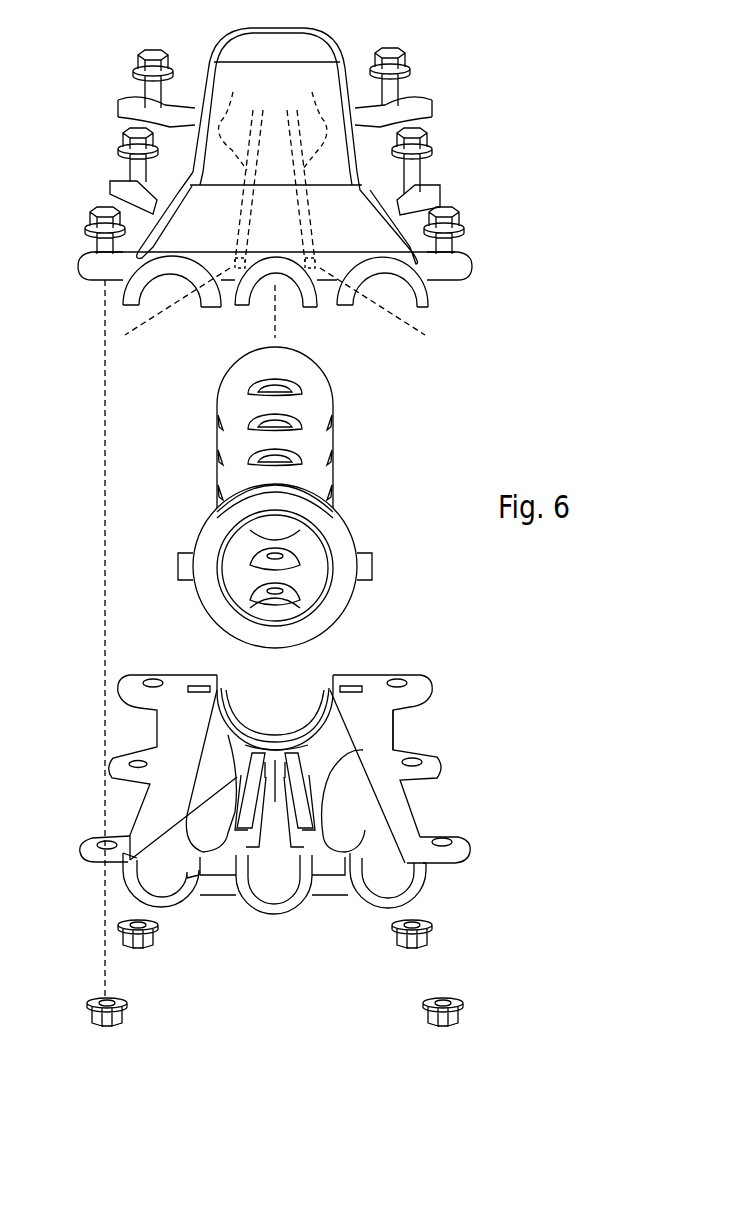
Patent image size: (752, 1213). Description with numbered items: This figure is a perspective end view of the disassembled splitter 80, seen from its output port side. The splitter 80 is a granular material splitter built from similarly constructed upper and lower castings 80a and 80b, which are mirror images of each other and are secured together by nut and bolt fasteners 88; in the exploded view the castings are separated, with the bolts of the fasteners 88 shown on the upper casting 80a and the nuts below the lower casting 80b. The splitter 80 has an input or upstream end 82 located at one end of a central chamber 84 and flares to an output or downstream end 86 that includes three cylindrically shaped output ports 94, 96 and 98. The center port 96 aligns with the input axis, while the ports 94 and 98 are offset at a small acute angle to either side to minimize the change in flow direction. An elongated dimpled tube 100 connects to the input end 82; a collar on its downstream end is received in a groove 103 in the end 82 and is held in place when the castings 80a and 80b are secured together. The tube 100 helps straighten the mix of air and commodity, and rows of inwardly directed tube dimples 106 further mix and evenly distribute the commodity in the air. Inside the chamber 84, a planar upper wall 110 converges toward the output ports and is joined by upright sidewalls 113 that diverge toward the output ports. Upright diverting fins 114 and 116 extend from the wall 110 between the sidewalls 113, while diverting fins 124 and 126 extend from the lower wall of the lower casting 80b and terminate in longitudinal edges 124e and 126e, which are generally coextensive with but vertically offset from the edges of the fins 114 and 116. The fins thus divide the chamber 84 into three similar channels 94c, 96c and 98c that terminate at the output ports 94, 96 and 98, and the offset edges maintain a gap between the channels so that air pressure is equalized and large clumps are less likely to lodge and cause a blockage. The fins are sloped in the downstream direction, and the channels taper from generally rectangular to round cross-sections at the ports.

The splitter 80 is at (500, 235).
The upper casting 80a is at (346, 58).
The lower casting 80b is at (407, 820).
The input end 82 is at (377, 660).
The central chamber 84 is at (350, 757).
The output end 86 is at (340, 892).
The fasteners 88 is at (137, 57).
The output port 94 is at (165, 907).
The channel 94c is at (208, 796).
The output port 96 is at (267, 908).
The channel 96c is at (273, 800).
The output port 98 is at (420, 893).
The channel 98c is at (322, 817).
The dimpled tube 100 is at (333, 392).
The groove 103 is at (318, 730).
The tube dimples 106 is at (253, 458).
The upper wall 110 is at (288, 100).
The upright sidewalls 113 is at (120, 115).
The diverting fin 114 is at (237, 120).
The diverting fin 116 is at (313, 118).
The diverting fin 124 is at (266, 848).
The longitudinal edge 124e is at (237, 822).
The diverting fin 126 is at (276, 842).
The longitudinal edge 126e is at (313, 822).